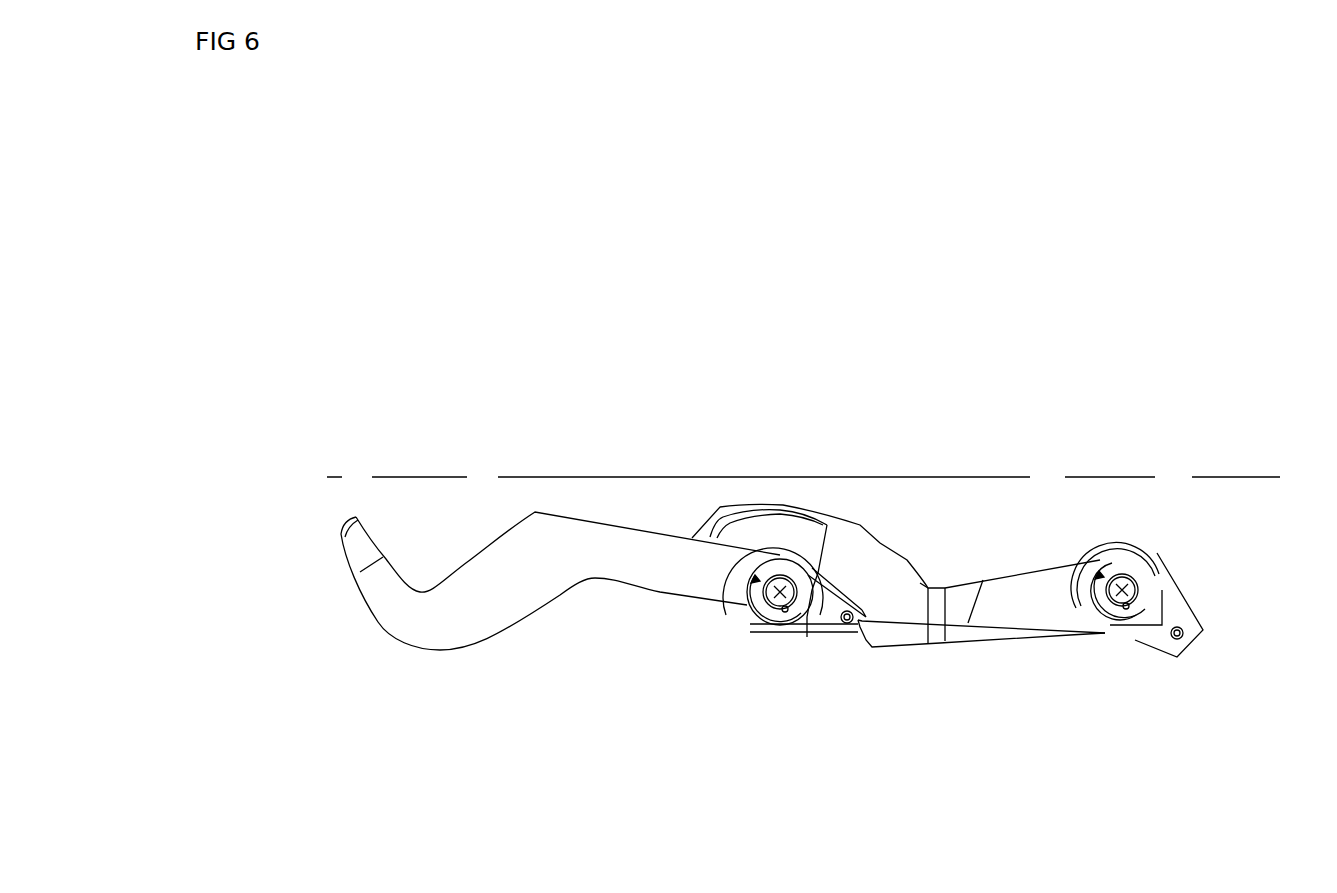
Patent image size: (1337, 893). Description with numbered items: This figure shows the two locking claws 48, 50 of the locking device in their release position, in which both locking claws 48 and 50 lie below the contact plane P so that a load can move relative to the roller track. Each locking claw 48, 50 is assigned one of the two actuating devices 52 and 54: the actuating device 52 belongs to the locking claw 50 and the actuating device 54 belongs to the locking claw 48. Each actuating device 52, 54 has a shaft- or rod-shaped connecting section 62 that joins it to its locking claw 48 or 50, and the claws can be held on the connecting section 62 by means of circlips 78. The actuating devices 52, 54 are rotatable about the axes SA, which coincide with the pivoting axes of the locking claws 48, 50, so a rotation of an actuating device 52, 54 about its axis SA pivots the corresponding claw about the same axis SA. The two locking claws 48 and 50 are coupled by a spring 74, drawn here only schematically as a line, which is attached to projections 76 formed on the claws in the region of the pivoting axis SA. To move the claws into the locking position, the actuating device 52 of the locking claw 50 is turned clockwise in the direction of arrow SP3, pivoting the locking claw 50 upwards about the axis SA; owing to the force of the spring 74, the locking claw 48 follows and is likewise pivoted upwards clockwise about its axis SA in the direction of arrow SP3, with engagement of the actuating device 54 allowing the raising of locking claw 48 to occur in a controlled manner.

The locking claw 48 is at (850, 540).
The locking claw 50 is at (410, 628).
The actuating device 52 is at (787, 563).
The actuating device 54 is at (1127, 563).
The connecting section 62 is at (807, 637).
The spring 74 is at (983, 580).
The projection 76 is at (868, 645).
The circlip 78 is at (768, 626).
The axis SA is at (780, 598).
The arrow SP3 is at (745, 608).
The contact plane P is at (1258, 477).